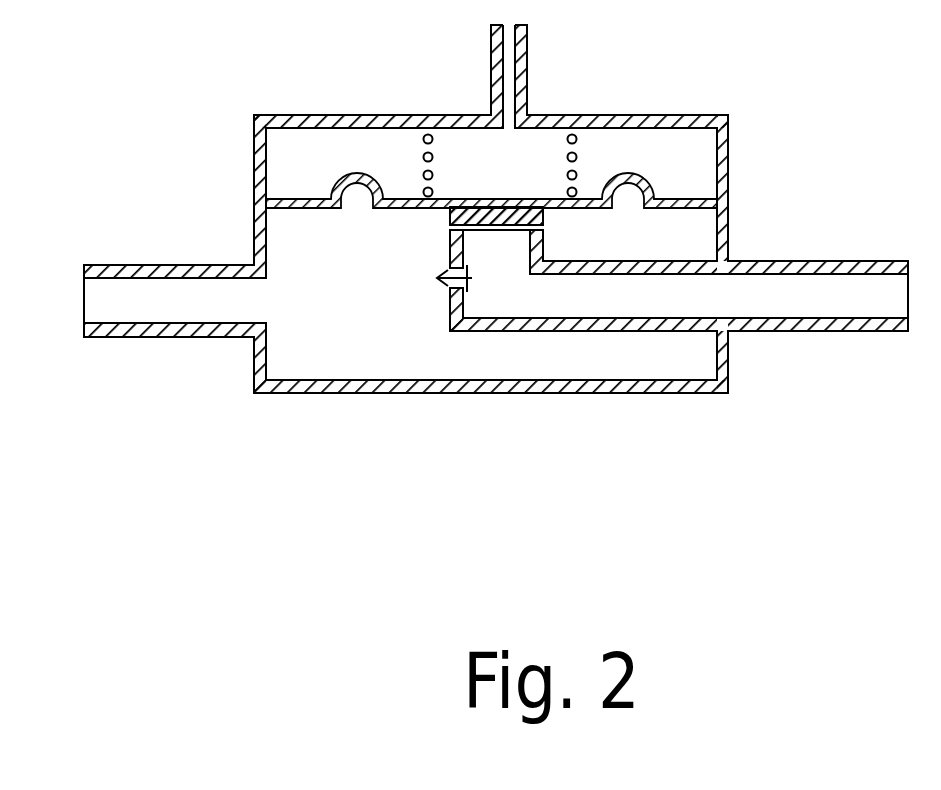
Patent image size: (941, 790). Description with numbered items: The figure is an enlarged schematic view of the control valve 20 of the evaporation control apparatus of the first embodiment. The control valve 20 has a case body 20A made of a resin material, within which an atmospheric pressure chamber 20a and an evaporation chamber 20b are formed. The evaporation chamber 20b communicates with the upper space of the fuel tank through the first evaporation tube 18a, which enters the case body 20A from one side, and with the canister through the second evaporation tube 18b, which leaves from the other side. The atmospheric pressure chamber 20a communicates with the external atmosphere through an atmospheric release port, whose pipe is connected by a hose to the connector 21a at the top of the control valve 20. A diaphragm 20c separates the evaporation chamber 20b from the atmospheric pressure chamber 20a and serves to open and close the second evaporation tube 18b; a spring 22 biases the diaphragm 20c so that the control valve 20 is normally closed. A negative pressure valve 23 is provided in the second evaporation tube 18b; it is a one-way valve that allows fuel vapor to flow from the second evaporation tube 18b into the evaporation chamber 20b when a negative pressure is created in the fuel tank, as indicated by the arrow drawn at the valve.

The control valve 20 is at (678, 393).
The case body 20A is at (500, 395).
The atmospheric pressure chamber 20a is at (292, 162).
The evaporation chamber 20b is at (333, 360).
The diaphragm 20c is at (683, 197).
The connector 21a is at (526, 49).
The spring 22 is at (424, 158).
The negative pressure valve 23 is at (473, 282).
The first evaporation tube 18a is at (170, 338).
The second evaporation tube 18b is at (858, 332).